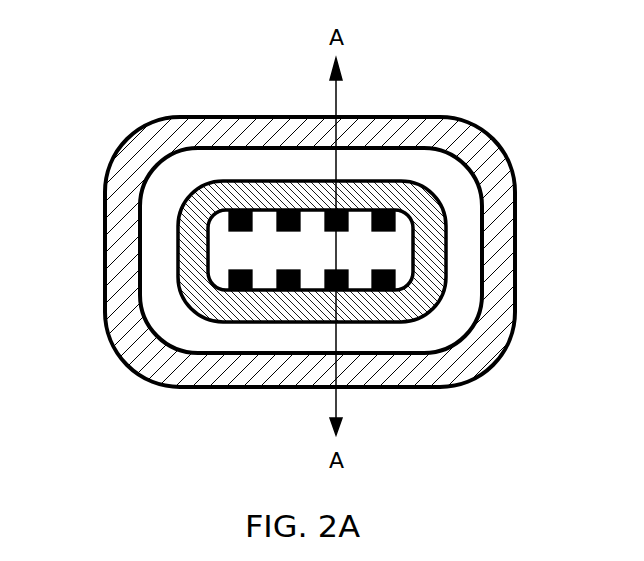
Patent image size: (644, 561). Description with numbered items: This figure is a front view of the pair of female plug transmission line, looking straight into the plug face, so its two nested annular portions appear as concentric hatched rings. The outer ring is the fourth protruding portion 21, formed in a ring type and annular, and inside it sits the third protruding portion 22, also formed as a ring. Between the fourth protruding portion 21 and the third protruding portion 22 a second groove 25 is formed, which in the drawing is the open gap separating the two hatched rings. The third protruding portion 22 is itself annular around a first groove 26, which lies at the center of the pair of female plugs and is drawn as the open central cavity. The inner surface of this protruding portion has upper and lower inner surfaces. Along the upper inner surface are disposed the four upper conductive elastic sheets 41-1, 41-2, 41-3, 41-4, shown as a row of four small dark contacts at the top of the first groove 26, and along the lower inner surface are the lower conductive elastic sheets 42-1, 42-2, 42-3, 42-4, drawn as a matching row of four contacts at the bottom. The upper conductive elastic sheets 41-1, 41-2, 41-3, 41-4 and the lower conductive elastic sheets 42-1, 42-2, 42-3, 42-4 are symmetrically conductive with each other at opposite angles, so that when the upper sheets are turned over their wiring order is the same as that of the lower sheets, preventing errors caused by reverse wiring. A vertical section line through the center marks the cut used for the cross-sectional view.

The fourth protruding portion 21 is at (472, 120).
The third protruding portion 22 is at (190, 245).
The second groove 25 is at (457, 242).
The first groove 26 is at (380, 247).
The upper conductive elastic sheet 41-1 is at (231, 210).
The upper conductive elastic sheet 41-2 is at (281, 210).
The upper conductive elastic sheet 41-3 is at (326, 210).
The upper conductive elastic sheet 41-4 is at (385, 210).
The lower conductive elastic sheet 42-1 is at (232, 290).
The lower conductive elastic sheet 42-2 is at (282, 290).
The lower conductive elastic sheet 42-3 is at (330, 290).
The lower conductive elastic sheet 42-4 is at (386, 290).